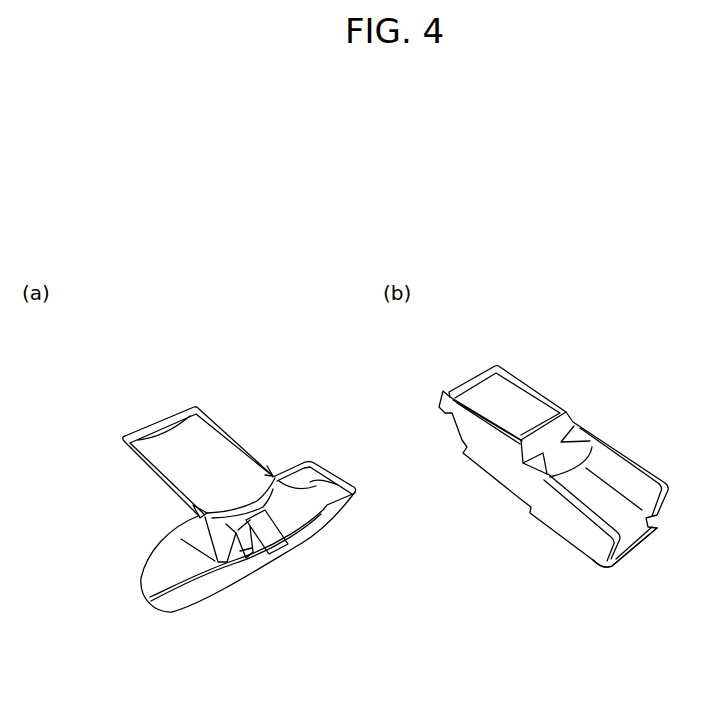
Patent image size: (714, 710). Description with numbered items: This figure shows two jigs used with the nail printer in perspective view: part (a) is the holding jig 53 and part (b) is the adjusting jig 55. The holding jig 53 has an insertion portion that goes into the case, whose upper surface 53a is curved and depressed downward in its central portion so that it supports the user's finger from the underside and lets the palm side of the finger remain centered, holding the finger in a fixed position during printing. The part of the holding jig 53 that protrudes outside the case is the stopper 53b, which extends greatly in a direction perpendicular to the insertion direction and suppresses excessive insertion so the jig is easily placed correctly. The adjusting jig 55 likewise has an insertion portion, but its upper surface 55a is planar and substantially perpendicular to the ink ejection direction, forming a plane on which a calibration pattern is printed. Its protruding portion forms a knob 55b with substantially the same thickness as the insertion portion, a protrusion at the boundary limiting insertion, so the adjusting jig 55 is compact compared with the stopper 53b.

The holding jig 53 is at (123, 390).
The upper surface 53a is at (183, 450).
The stopper 53b is at (158, 586).
The adjusting jig 55 is at (573, 358).
The upper surface 55a is at (487, 398).
The knob 55b is at (606, 557).